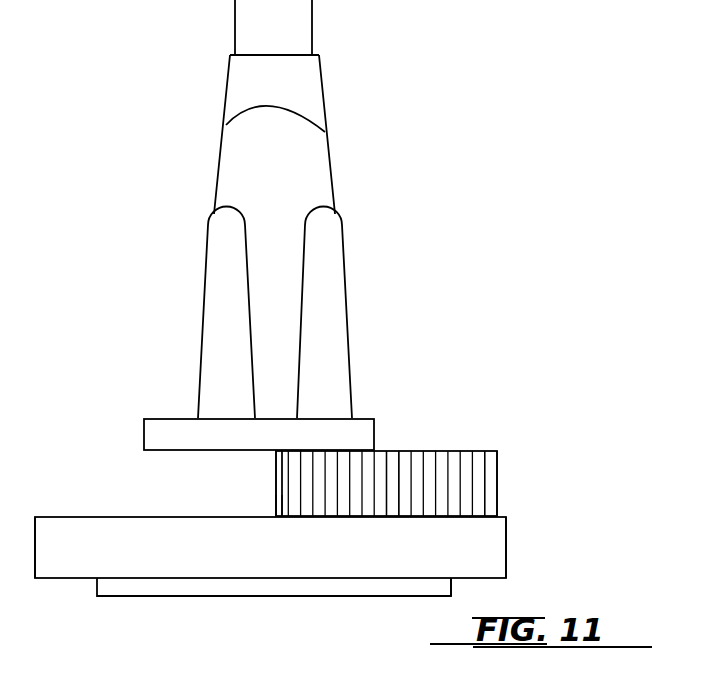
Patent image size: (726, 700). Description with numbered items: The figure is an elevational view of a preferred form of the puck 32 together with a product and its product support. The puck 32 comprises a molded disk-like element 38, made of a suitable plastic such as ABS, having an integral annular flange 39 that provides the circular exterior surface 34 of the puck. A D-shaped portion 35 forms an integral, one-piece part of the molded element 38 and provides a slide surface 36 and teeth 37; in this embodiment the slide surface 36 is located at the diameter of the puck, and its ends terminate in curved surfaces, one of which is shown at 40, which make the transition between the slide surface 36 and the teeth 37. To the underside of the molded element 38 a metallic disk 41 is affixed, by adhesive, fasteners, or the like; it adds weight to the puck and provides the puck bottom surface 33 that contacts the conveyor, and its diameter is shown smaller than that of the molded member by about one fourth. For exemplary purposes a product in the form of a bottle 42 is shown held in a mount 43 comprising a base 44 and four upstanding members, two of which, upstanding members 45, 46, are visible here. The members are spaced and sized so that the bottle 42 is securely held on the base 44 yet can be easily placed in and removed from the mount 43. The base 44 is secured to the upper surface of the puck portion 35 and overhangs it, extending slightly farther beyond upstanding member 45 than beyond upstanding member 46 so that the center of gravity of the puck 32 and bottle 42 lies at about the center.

The puck 32 is at (448, 448).
The puck bottom surface 33 is at (285, 597).
The circular exterior surface 34 is at (490, 547).
The D-shaped portion 35 is at (395, 448).
The slide surface 36 is at (276, 466).
The teeth 37 is at (487, 463).
The molded disk-like element 38 is at (55, 527).
The annular flange 39 is at (492, 527).
The curved surface 40 is at (278, 503).
The metallic disk 41 is at (453, 587).
The bottle 42 is at (313, 143).
The mount 43 is at (354, 417).
The base 44 is at (317, 423).
The upstanding member 45 is at (235, 270).
The upstanding member 46 is at (332, 268).